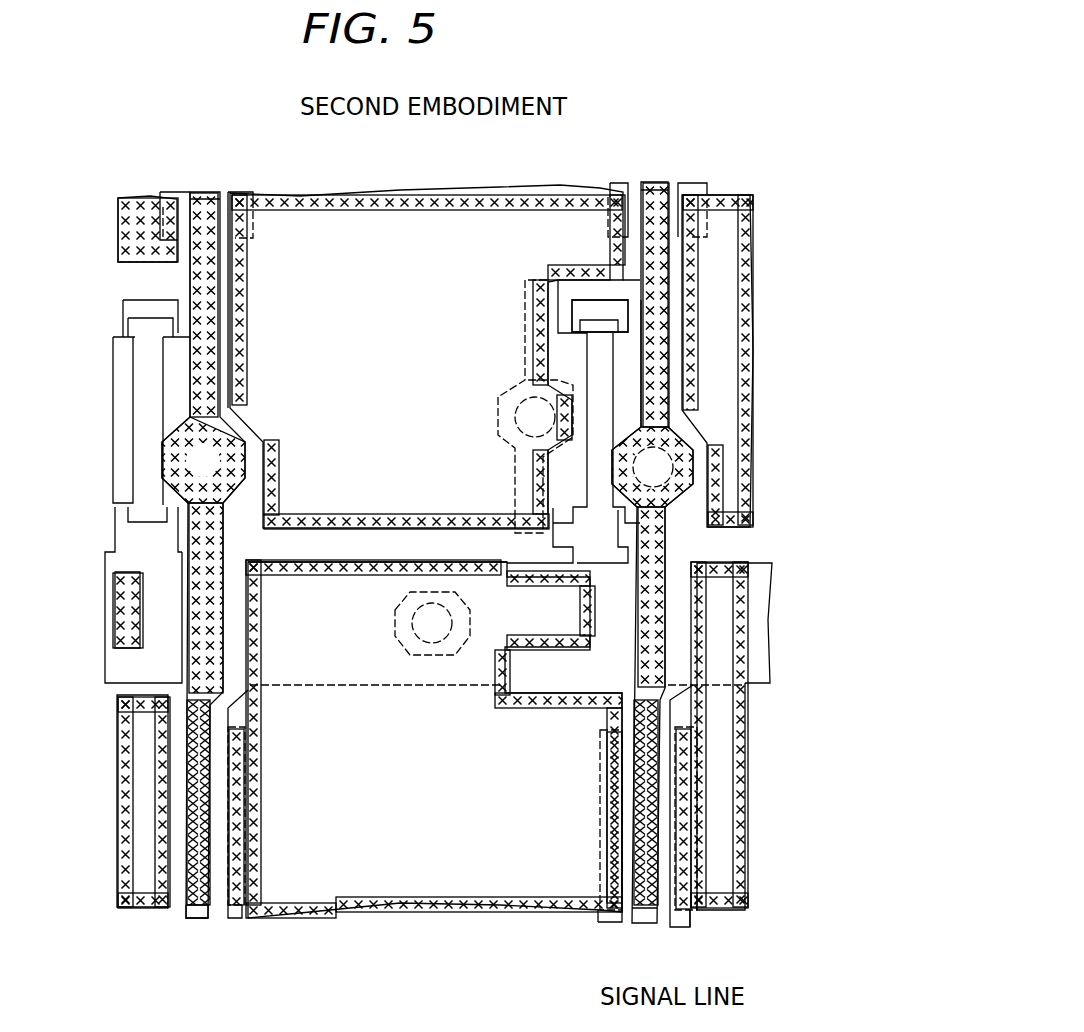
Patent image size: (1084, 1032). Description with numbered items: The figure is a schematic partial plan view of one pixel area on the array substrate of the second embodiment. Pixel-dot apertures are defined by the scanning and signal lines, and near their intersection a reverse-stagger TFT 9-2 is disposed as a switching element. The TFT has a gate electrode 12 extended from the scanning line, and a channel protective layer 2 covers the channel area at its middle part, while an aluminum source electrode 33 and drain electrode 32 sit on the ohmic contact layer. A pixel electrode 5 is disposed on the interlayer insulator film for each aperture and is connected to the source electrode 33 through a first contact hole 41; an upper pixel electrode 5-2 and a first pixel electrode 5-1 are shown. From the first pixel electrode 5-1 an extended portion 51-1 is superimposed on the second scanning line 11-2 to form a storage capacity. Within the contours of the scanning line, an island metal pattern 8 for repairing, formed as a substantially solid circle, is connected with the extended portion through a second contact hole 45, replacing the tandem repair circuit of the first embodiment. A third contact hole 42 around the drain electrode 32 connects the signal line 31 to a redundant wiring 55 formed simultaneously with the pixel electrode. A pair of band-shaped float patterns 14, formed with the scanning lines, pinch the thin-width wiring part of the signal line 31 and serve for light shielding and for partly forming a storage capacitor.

The pixel electrode 5 is at (135, 232).
The pixel electrode 5-2 is at (302, 217).
The first pixel electrode 5-1 is at (333, 892).
The extended portion 51-1 is at (290, 585).
The signal line 31 is at (193, 903).
The redundant wiring 55 is at (185, 918).
The third contact hole 42 is at (680, 465).
The second scanning line 11-2 is at (755, 620).
The gate electrode 12 is at (605, 305).
The channel protective layer 2 is at (608, 328).
The drain electrode 32 is at (630, 378).
The TFT 9-2 is at (600, 284).
The source electrode 33 is at (530, 393).
The first contact hole 41 is at (508, 390).
The island metal pattern for repairing 8 is at (397, 617).
The second contact hole 45 is at (432, 642).
The band-shaped float pattern 14 is at (603, 915).